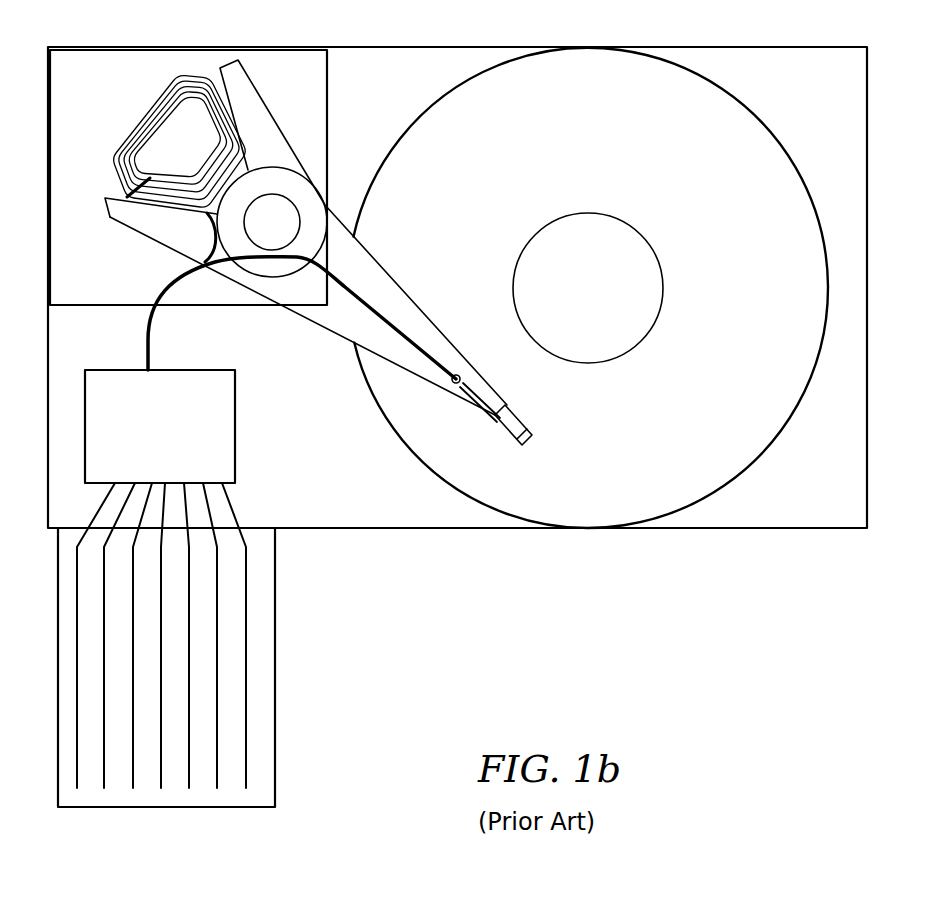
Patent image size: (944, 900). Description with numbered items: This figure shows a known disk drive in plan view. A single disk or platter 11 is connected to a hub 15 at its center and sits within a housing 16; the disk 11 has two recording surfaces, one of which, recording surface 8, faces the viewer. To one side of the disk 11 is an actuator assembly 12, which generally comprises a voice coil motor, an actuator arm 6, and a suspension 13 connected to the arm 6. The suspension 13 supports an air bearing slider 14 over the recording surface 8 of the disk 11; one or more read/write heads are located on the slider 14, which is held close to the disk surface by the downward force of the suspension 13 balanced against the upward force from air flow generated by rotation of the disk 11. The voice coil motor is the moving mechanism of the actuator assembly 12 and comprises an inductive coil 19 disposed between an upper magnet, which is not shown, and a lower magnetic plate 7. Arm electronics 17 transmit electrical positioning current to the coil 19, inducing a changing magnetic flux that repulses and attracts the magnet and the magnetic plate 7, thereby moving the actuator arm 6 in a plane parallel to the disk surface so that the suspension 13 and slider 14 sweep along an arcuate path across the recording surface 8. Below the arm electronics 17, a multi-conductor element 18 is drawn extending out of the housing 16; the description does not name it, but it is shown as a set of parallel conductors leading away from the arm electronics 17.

The actuator arm 6 is at (267, 112).
The lower magnetic plate 7 is at (88, 248).
The recording surface 8 is at (516, 165).
The disk 11 is at (773, 128).
The actuator assembly 12 is at (313, 158).
The suspension 13 is at (416, 298).
The air bearing slider 14 is at (511, 418).
The hub 15 is at (650, 252).
The housing 16 is at (812, 47).
The arm electronics 17 is at (236, 434).
The flex cable 18 is at (275, 711).
The inductive coil 19 is at (148, 104).